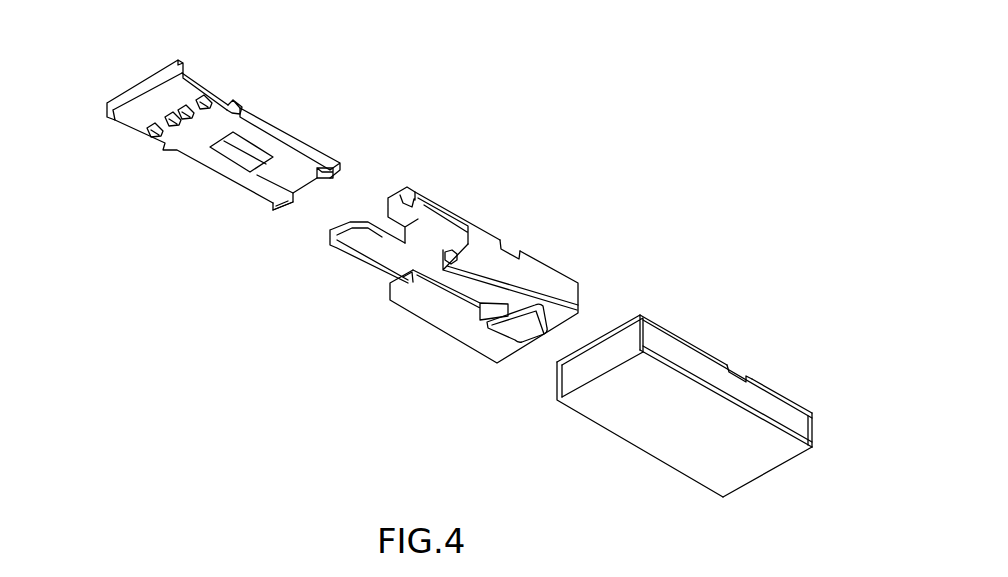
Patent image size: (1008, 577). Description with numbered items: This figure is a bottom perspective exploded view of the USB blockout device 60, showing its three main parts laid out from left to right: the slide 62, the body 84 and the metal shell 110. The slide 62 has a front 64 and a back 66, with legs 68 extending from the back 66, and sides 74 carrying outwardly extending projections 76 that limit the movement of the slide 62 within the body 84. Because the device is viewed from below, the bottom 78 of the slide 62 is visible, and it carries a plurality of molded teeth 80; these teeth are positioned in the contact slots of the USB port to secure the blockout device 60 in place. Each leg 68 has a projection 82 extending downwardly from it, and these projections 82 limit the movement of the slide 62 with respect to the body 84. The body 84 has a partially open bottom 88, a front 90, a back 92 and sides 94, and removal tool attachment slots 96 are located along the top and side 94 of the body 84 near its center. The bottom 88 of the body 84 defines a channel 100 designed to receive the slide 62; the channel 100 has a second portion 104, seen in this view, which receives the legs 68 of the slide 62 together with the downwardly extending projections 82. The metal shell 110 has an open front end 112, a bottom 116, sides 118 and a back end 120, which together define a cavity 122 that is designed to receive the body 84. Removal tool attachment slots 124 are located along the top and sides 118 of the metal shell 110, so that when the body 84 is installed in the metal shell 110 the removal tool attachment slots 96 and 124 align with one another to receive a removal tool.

The USB blockout device 60 is at (303, 388).
The slide 62 is at (221, 146).
The front 64 is at (107, 102).
The back 66 is at (288, 203).
The legs 68 is at (260, 193).
The sides 74 is at (290, 137).
The projections 76 is at (238, 109).
The bottom 78 is at (195, 145).
The molded teeth 80 is at (160, 137).
The projection 82 is at (322, 173).
The body 84 is at (459, 258).
The partially open bottom 88 is at (460, 325).
The front 90 is at (395, 197).
The back 92 is at (582, 293).
The sides 94 is at (542, 277).
The removal tool attachment slots 96 is at (513, 248).
The channel 100 is at (430, 263).
The second portion 104 is at (370, 267).
The metal shell 110 is at (694, 396).
The open front end 112 is at (618, 323).
The bottom 116 is at (687, 460).
The sides 118 is at (792, 415).
The back end 120 is at (812, 427).
The cavity 122 is at (572, 382).
The removal tool attachment slots 124 is at (737, 375).